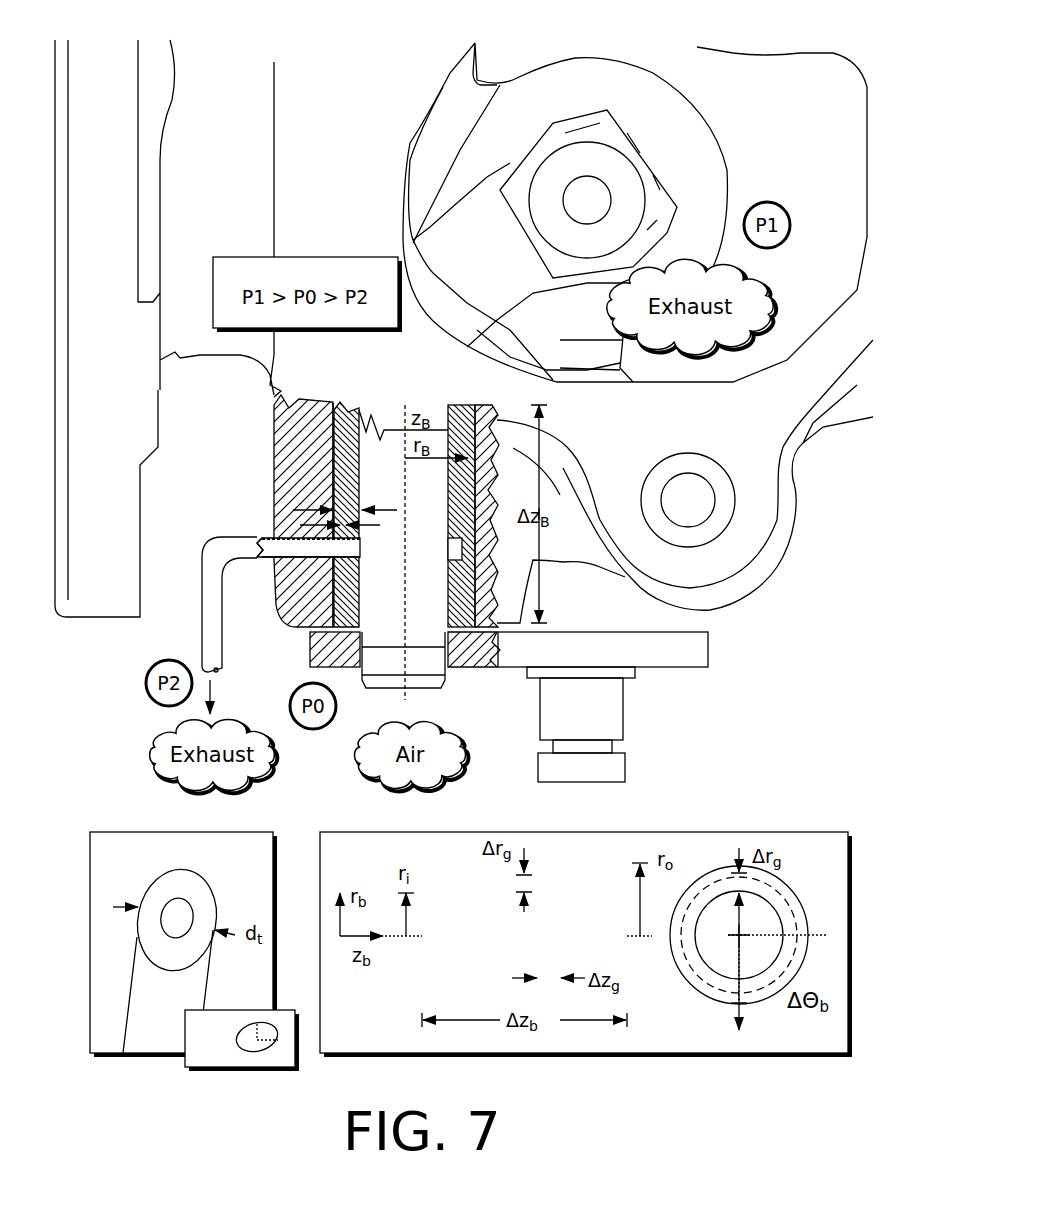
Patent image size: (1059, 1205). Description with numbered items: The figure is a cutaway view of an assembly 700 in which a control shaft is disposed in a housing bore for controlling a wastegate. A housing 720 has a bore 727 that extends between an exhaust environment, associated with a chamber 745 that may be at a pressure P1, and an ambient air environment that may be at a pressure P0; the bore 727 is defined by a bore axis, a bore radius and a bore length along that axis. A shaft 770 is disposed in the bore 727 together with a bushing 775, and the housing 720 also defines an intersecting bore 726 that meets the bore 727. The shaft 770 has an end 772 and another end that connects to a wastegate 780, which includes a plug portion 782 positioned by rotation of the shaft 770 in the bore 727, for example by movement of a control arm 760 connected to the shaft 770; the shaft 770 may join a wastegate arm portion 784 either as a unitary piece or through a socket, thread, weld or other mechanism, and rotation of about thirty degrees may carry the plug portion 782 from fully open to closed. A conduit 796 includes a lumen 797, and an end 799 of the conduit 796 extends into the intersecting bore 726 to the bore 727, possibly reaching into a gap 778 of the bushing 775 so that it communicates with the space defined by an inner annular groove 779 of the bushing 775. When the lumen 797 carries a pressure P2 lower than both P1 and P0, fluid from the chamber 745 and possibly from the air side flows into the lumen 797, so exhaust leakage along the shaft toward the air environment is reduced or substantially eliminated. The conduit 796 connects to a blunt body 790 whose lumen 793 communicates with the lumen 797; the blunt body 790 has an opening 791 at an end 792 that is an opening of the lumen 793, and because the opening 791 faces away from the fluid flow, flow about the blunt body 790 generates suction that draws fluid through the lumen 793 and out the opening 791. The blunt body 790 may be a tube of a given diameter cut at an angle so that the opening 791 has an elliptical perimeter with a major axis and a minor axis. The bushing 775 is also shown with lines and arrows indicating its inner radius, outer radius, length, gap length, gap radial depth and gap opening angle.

The assembly 700 is at (752, 735).
The housing 720 is at (274, 467).
The intersecting bore 726 is at (277, 617).
The bore 727 is at (334, 405).
The chamber 745 is at (810, 169).
The control arm 760 is at (670, 667).
The shaft 770 is at (422, 616).
The end 772 is at (418, 682).
The bushing 775 is at (360, 415).
The gap 778 is at (337, 559).
The inner annular groove 779 is at (448, 538).
The wastegate 780 is at (712, 107).
The plug portion 782 is at (575, 58).
The wastegate arm portion 784 is at (547, 133).
The blunt body 790 is at (178, 1005).
The opening 791 is at (180, 898).
The end 792 is at (195, 870).
The lumen 793 is at (173, 917).
The conduit 796 is at (237, 532).
The lumen 797 is at (270, 542).
The end 799 is at (337, 541).